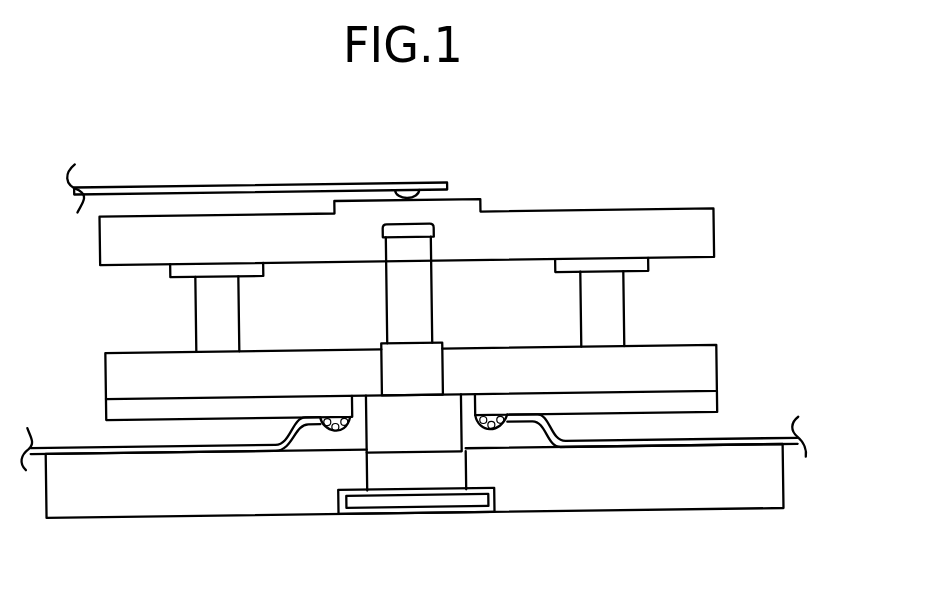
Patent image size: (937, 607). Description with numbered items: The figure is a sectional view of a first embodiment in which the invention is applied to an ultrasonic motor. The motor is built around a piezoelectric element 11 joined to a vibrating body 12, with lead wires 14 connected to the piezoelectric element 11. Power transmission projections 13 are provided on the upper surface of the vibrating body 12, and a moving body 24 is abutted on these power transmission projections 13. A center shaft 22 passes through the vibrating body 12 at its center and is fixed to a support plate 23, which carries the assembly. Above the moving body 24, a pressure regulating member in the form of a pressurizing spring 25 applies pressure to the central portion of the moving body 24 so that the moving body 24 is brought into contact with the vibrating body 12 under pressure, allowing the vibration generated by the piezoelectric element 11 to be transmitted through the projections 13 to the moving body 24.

The piezoelectric element 11 is at (705, 409).
The vibrating body 12 is at (700, 371).
The power transmission projections 13 is at (613, 318).
The lead wires 14 is at (752, 443).
The center shaft 22 is at (427, 433).
The support plate 23 is at (762, 495).
The moving body 24 is at (700, 237).
The pressurizing spring 25 is at (448, 181).